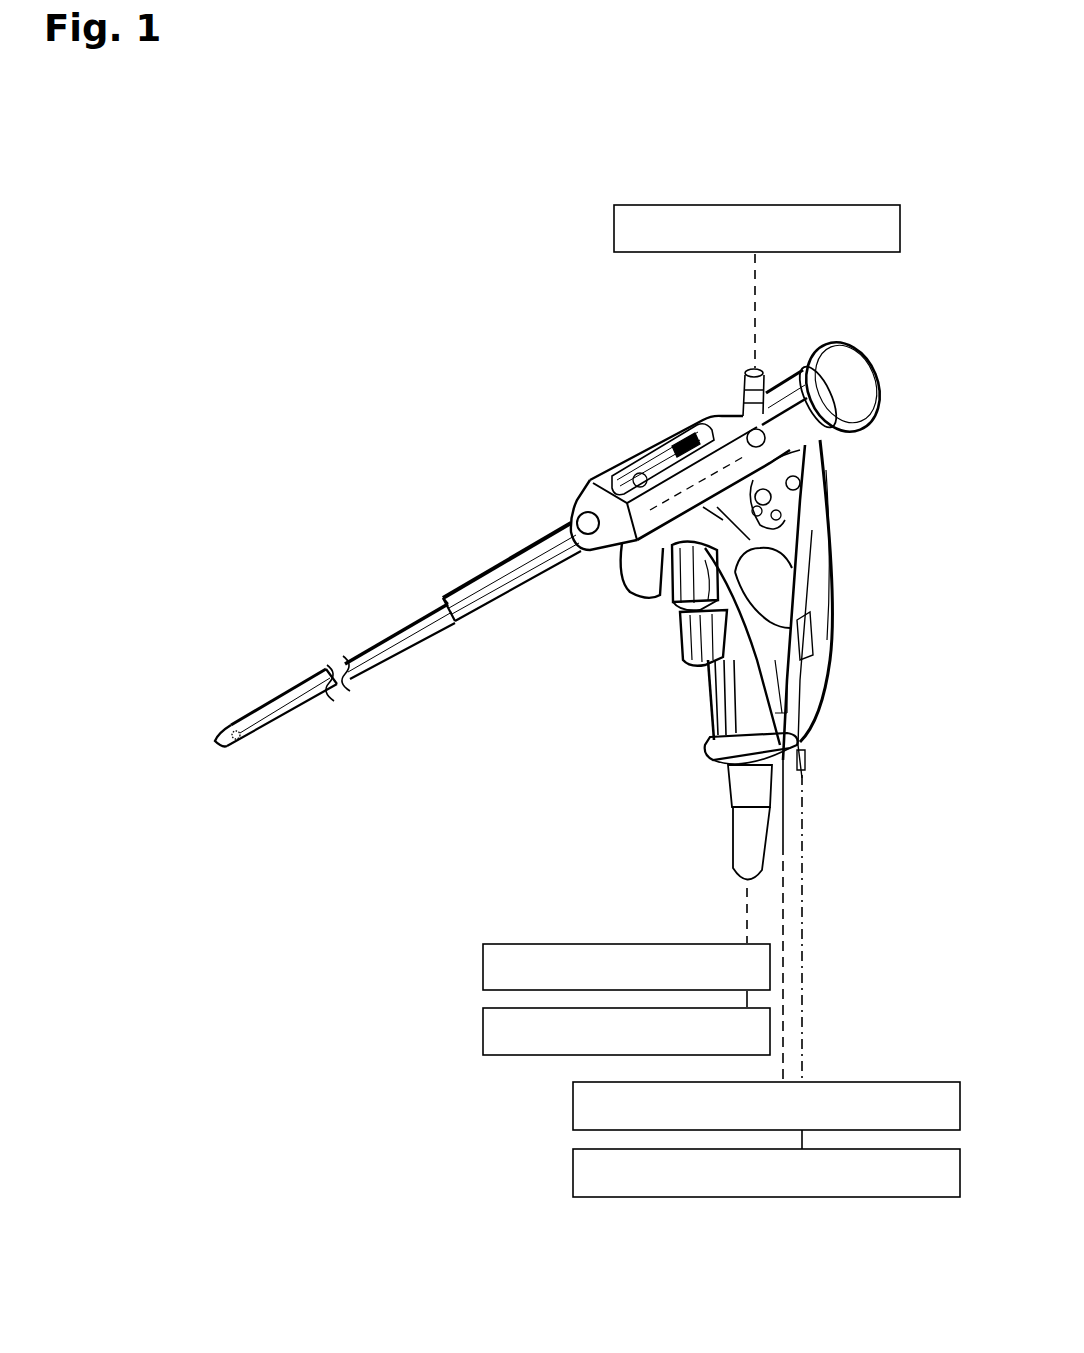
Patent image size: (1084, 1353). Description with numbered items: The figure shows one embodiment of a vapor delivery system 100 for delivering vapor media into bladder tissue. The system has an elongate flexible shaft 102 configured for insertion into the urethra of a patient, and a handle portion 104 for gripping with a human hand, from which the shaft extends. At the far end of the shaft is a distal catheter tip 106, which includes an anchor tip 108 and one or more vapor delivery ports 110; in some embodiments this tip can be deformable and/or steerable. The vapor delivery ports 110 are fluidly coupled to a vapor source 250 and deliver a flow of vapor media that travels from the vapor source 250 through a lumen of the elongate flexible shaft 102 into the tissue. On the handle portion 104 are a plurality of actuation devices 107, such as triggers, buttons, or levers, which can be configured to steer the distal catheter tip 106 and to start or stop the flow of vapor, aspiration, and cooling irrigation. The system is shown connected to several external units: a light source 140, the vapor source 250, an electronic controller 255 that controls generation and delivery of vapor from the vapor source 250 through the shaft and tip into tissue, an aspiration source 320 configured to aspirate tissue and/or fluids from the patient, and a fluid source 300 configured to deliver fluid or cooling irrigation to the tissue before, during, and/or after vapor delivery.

The vapor delivery system 100 is at (403, 389).
The elongate flexible shaft 102 is at (287, 693).
The handle portion 104 is at (836, 611).
The distal catheter tip 106 is at (265, 745).
The actuation devices 107 is at (660, 613).
The anchor tip 108 is at (205, 758).
The vapor delivery ports 110 is at (225, 728).
The light source 140 is at (842, 240).
The vapor source 250 is at (715, 979).
The electronic controller 255 is at (695, 1043).
The aspiration source 320 is at (877, 1117).
The fluid source 300 is at (943, 1184).